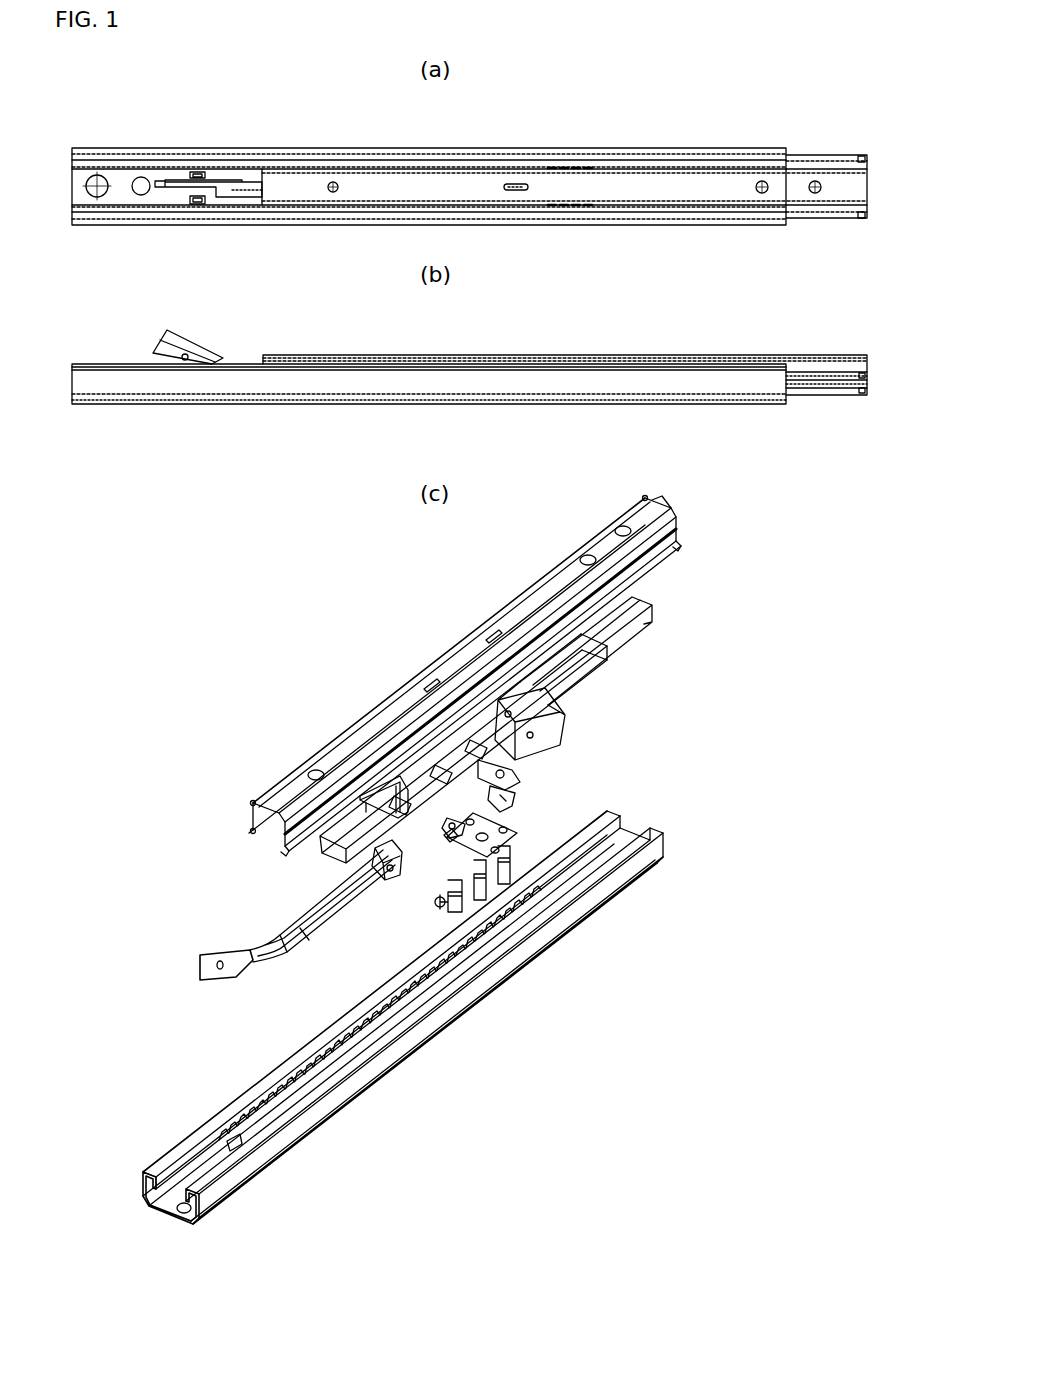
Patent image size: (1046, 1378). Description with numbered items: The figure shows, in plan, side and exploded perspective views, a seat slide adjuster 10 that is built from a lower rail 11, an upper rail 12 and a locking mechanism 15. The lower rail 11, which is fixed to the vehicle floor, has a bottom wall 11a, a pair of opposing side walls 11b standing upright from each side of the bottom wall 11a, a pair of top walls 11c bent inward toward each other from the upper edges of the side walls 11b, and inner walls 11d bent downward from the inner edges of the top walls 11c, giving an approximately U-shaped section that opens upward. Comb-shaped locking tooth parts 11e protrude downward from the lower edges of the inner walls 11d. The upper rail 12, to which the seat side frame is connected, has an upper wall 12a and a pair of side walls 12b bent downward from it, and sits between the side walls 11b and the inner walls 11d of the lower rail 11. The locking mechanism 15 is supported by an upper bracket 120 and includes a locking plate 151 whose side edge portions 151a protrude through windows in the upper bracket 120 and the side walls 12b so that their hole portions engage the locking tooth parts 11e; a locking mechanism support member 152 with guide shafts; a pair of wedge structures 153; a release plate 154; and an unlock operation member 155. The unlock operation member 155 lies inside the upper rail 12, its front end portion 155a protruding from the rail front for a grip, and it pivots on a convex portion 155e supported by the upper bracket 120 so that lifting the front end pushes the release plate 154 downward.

The seat slide adjuster 10 is at (528, 137).
The lower rail 11 is at (129, 136).
The bottom wall 11a is at (172, 1208).
The side wall (first side wall) 11b is at (650, 840).
The top wall 11c is at (218, 1112).
The inner wall 11d is at (190, 1152).
The locking tooth part 11e is at (366, 1010).
The upper rail 12 is at (819, 145).
The upper wall 12a is at (495, 632).
The side wall (second side wall) 12b is at (672, 520).
The upper bracket 120 is at (667, 615).
The locking mechanism 15 is at (428, 890).
The locking plate 151 is at (526, 834).
The side edge portion 151a is at (565, 166).
The locking mechanism support member 152 is at (452, 901).
The wedge structure 153 is at (528, 793).
The release plate 154 is at (519, 775).
The unlock operation member 155 is at (252, 168).
The front end portion 155a is at (175, 180).
The convex portion 155e is at (383, 866).